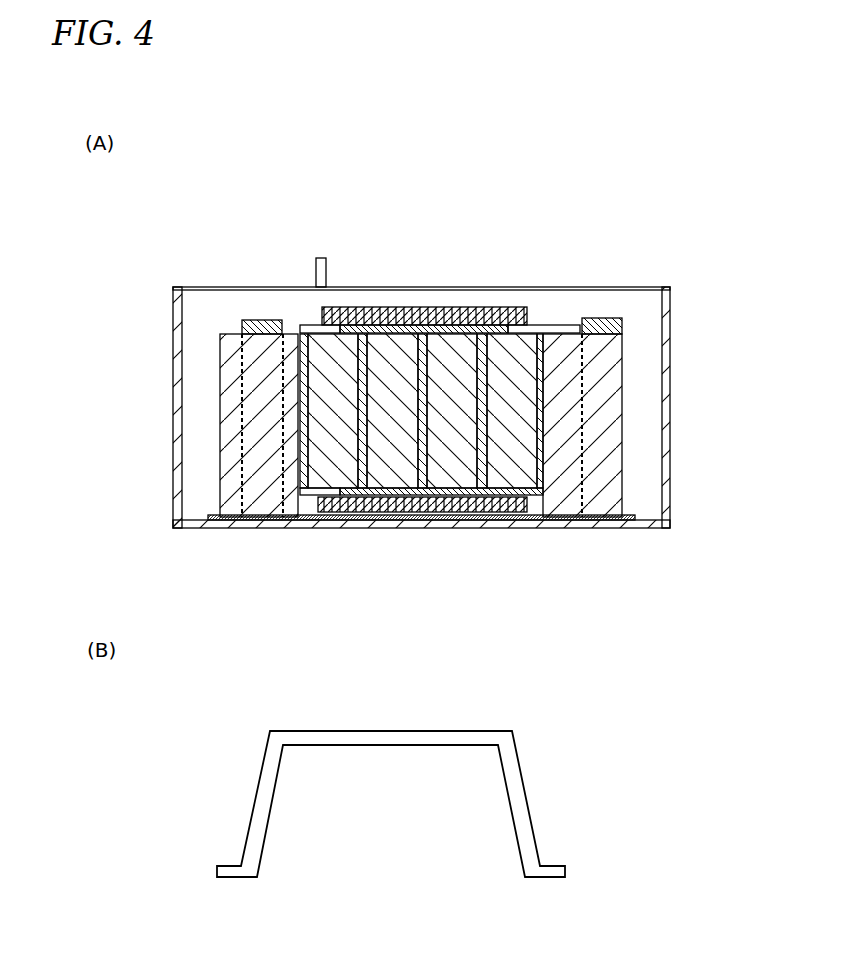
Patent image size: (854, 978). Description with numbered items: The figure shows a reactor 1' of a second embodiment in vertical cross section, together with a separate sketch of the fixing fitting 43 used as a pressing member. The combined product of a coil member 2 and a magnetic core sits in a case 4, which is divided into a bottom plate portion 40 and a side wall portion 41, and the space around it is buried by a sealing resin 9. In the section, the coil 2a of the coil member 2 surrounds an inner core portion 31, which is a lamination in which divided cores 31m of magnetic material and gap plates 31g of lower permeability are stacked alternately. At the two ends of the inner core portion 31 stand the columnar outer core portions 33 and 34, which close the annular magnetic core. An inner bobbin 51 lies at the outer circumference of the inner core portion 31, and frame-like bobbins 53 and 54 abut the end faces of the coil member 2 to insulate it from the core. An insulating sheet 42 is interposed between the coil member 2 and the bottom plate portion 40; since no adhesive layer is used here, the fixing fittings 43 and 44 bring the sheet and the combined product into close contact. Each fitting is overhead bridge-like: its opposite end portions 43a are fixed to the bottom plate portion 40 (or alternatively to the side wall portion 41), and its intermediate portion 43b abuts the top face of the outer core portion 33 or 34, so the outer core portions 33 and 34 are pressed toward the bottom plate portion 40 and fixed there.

The reactor 1' is at (416, 501).
The coil member 2 is at (422, 411).
The coil 2a is at (410, 310).
The case 4 is at (416, 423).
The sealing resin 9 is at (192, 338).
The inner core portion 31 is at (504, 470).
The divided core 31m is at (523, 477).
The gap plate 31g is at (545, 457).
The outer core portion 33 is at (228, 345).
The outer core portion 34 is at (617, 429).
The bottom plate portion 40 is at (258, 525).
The side wall portion 41 is at (663, 399).
The insulating sheet 42 is at (352, 513).
The fixing fitting 43 is at (257, 320).
The end portion 43a is at (223, 866).
The intermediate portion 43b is at (395, 730).
The fixing fitting 44 is at (600, 320).
The inner bobbin 51 is at (465, 318).
The frame-like bobbin 53 is at (307, 328).
The frame-like bobbin 54 is at (535, 328).